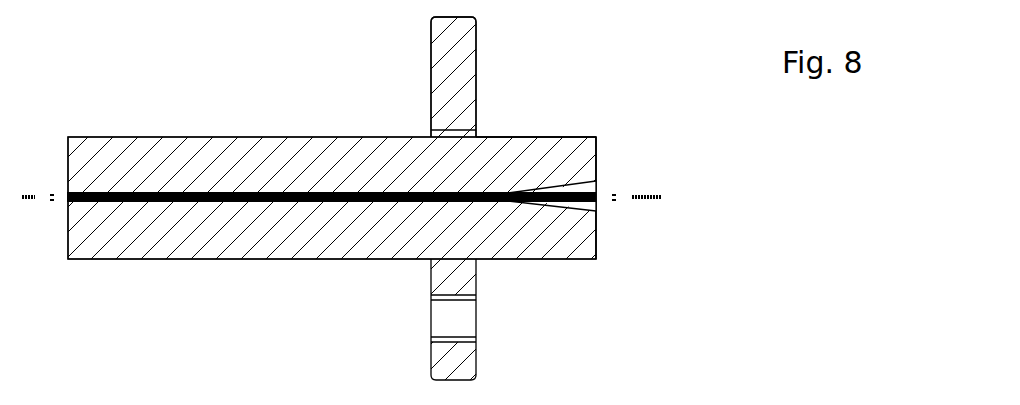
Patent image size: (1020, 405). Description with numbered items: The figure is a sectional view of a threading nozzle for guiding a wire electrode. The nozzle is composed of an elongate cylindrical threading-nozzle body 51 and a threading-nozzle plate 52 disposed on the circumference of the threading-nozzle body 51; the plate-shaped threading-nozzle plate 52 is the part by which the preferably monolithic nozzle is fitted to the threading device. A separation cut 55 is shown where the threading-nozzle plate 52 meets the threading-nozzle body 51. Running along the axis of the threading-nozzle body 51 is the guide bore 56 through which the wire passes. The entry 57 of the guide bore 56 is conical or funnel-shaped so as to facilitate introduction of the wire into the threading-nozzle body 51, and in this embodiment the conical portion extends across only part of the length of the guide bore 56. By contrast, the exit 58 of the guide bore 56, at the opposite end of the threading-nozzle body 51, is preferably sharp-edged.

The threading-nozzle body 51 is at (562, 223).
The threading-nozzle plate 52 is at (441, 48).
The separation cut 55 is at (470, 137).
The guide bore 56 is at (290, 200).
The entry of guide bore 57 is at (596, 193).
The exit of guide bore 58 is at (64, 200).